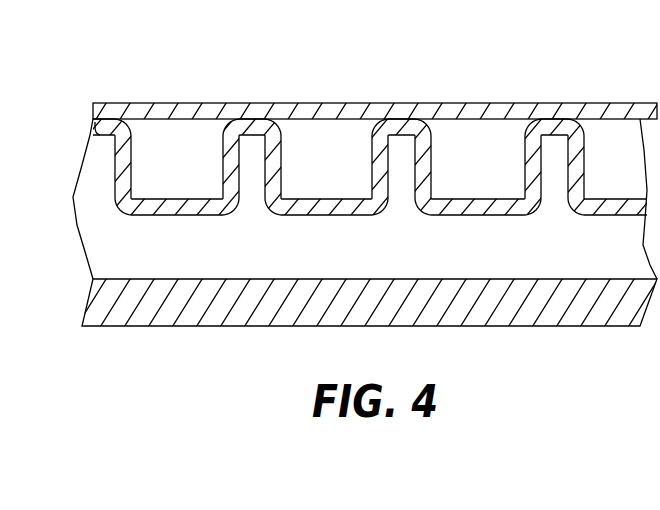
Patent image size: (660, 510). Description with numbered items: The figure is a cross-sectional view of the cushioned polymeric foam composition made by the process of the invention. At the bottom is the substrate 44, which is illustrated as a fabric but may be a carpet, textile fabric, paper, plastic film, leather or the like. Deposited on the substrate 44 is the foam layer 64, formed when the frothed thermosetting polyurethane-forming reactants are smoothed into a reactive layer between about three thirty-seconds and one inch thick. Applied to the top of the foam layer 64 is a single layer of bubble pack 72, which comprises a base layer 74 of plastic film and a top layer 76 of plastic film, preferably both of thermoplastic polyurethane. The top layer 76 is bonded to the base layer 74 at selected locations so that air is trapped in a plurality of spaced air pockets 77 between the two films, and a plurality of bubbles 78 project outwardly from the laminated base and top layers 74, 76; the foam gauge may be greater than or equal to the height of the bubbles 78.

The bubble pack 72 is at (323, 78).
The base layer 74 is at (170, 103).
The top layer 76 is at (103, 130).
The air pockets 77 is at (473, 138).
The bubbles 78 is at (124, 212).
The reactive layer 64 is at (488, 252).
The substrate 44 is at (598, 290).